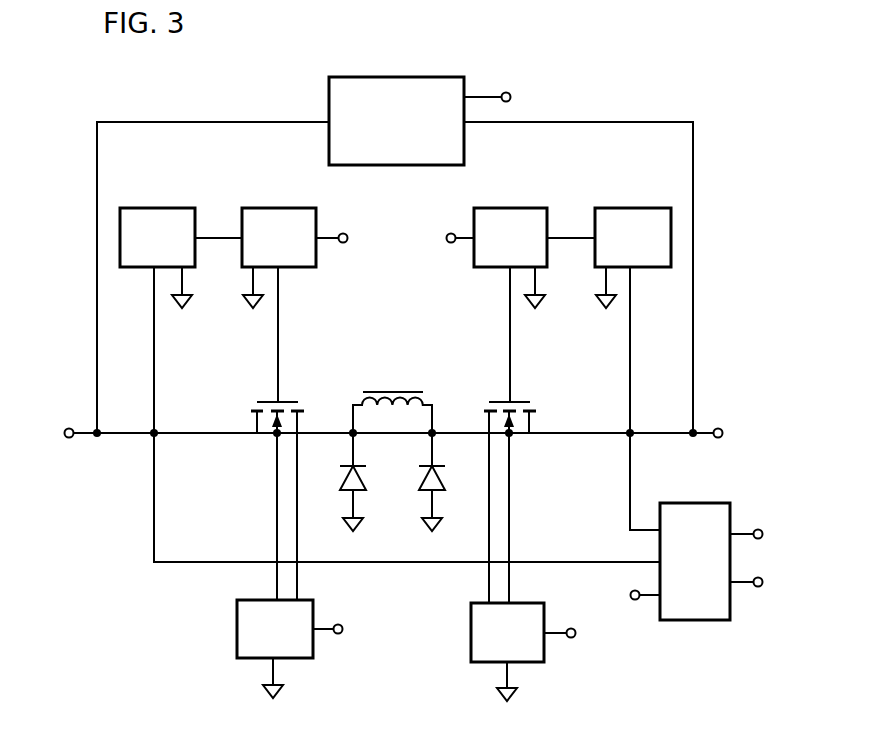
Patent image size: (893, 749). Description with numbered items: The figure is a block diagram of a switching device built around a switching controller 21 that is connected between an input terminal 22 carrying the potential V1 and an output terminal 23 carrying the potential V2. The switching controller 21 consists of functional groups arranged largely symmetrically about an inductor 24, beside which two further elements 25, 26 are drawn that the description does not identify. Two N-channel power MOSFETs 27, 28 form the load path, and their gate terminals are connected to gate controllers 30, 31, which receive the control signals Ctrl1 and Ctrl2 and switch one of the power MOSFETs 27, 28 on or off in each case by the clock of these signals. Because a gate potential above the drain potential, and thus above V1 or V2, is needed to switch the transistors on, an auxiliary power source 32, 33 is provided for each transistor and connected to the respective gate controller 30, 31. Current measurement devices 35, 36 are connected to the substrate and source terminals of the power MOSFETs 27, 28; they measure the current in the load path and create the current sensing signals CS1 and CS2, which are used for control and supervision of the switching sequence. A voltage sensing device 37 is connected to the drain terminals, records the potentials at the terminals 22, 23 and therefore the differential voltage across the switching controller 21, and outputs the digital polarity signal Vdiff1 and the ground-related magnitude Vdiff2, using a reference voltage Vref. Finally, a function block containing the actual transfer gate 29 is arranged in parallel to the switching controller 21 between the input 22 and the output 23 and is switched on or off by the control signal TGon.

The switching controller 21 is at (410, 448).
The terminal 22 is at (62, 433).
The terminal 23 is at (724, 433).
The inductor 24 is at (395, 392).
The first diode 25 is at (359, 490).
The second diode 26 is at (438, 490).
The power MOSFET 27 is at (252, 405).
The power MOSFET 28 is at (537, 408).
The transfer gate 29 is at (396, 77).
The gate controller 30 is at (275, 208).
The gate controller 31 is at (508, 208).
The auxiliary power source 32 is at (155, 208).
The auxiliary power source 33 is at (628, 208).
The current measurement device 35 is at (237, 628).
The current measurement device 36 is at (471, 648).
The voltage sensing device 37 is at (700, 620).